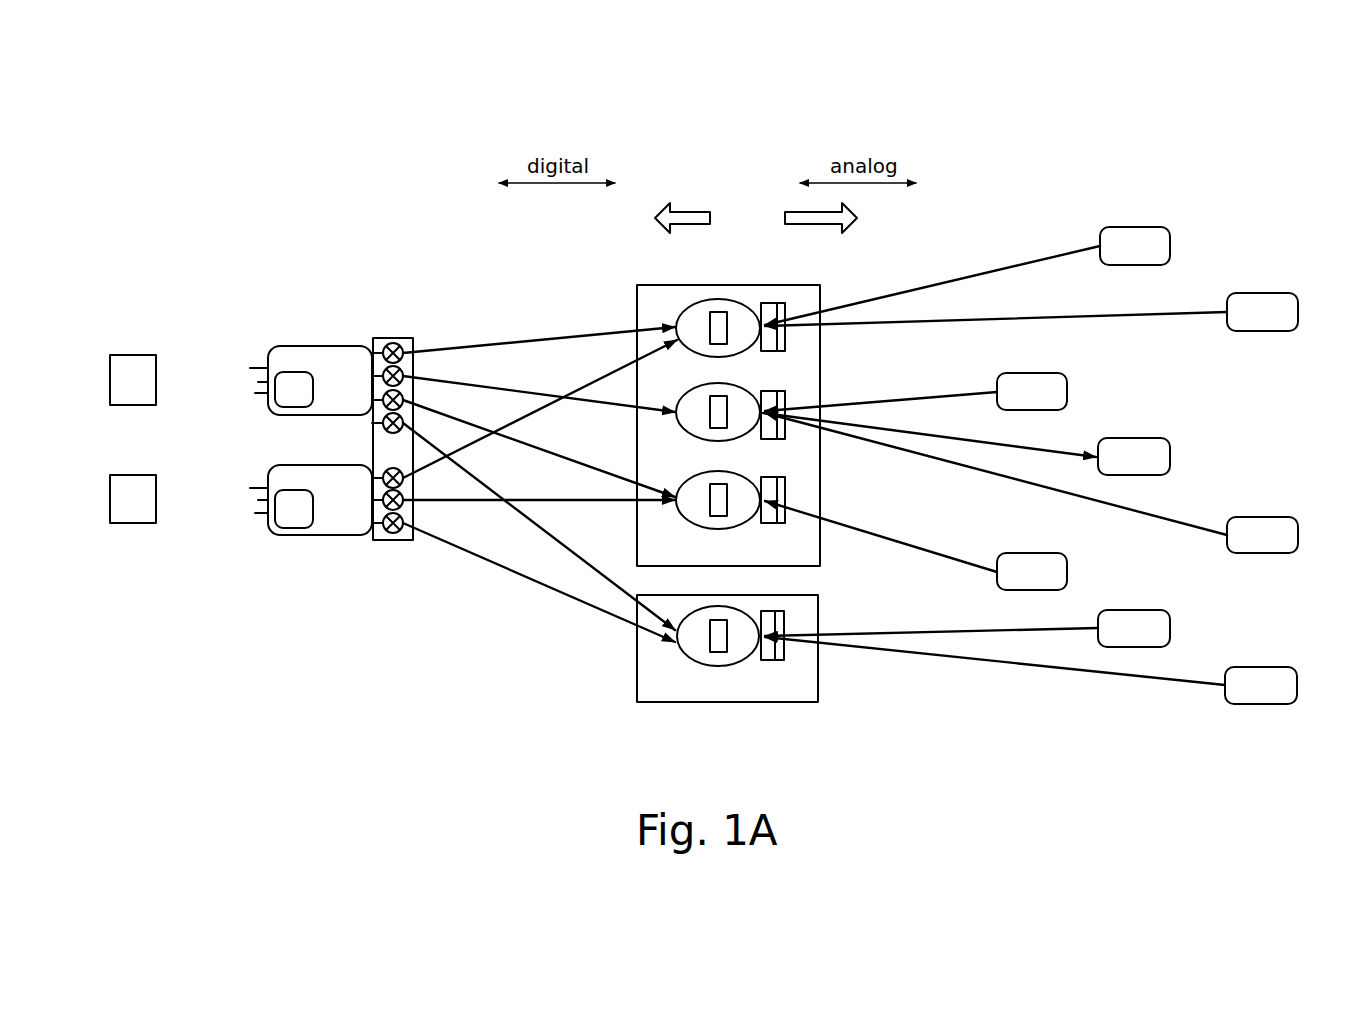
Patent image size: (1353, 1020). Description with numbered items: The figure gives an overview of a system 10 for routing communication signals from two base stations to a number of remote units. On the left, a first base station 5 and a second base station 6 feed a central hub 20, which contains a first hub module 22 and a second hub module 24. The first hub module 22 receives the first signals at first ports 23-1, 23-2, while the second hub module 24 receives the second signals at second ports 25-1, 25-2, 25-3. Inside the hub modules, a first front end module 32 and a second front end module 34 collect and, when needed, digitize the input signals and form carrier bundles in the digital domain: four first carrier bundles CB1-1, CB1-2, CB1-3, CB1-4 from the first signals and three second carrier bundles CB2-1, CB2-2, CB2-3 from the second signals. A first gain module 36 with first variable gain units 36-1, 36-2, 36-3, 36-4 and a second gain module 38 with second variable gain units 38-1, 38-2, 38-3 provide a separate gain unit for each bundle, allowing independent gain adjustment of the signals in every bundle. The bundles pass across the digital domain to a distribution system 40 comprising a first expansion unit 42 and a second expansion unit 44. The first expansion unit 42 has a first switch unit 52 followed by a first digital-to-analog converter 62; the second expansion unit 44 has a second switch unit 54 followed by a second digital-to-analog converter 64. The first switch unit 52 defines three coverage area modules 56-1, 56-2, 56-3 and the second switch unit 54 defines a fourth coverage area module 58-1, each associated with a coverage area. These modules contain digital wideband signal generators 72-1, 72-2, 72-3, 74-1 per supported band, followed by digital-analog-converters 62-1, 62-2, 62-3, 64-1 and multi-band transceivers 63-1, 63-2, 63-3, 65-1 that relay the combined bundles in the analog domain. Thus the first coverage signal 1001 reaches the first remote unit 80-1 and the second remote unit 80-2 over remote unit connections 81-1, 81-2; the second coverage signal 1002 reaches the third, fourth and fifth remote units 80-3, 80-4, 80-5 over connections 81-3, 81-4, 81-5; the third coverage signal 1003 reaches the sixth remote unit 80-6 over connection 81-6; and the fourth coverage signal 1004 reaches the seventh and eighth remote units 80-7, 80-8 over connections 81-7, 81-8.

The system 10 is at (320, 186).
The first base station 5 is at (132, 355).
The second base station 6 is at (132, 523).
The central hub 20 is at (306, 608).
The first hub module 22 is at (317, 352).
The second hub module 24 is at (307, 508).
The first port 23-1 is at (252, 368).
The first port 23-2 is at (258, 382).
The second port 25-1 is at (252, 488).
The second port 25-2 is at (258, 500).
The second port 25-3 is at (256, 513).
The first front end module 32 is at (300, 408).
The second front end module 34 is at (295, 528).
The first gain module 36 is at (411, 437).
The first variable gain unit 36-1 is at (393, 343).
The first variable gain unit 36-2 is at (403, 376).
The first variable gain unit 36-3 is at (403, 400).
The first variable gain unit 36-4 is at (403, 423).
The second gain module 38 is at (411, 545).
The second variable gain unit 38-1 is at (403, 478).
The second variable gain unit 38-2 is at (413, 518).
The second variable gain unit 38-3 is at (393, 541).
The first carrier bundle CB1-1 is at (513, 343).
The first carrier bundle CB1-2 is at (520, 390).
The first carrier bundle CB1-3 is at (607, 456).
The first carrier bundle CB1-4 is at (491, 490).
The second carrier bundle CB2-1 is at (514, 423).
The second carrier bundle CB2-2 is at (569, 503).
The second carrier bundle CB2-3 is at (515, 573).
The distribution system 40 is at (754, 708).
The first expansion unit 42 is at (710, 395).
The second expansion unit 44 is at (728, 651).
The first switch unit 52 is at (651, 297).
The second switch unit 54 is at (811, 677).
The first coverage area module 56-1 is at (703, 312).
The second coverage area module 56-2 is at (720, 412).
The third coverage area module 56-3 is at (720, 499).
The fourth coverage area module 58-1 is at (714, 651).
The digital wideband signal generator 72-1 is at (713, 312).
The digital wideband signal generator 72-2 is at (719, 398).
The digital wideband signal generator 72-3 is at (719, 486).
The digital wideband signal generator 74-1 is at (722, 650).
The first digital-to-analog converter 62 is at (823, 370).
The first digital-analog-converter 62-1 is at (832, 294).
The first digital-analog-converter 62-2 is at (819, 391).
The first digital-analog-converter 62-3 is at (831, 487).
The first multi-band transceiver 63-1 is at (784, 310).
The first multi-band transceiver 63-2 is at (784, 405).
The first multi-band transceiver 63-3 is at (784, 486).
The second digital-to-analog converter 64 is at (832, 647).
The second digital to analog converter 64-1 is at (832, 610).
The second multi-band transceiver 65-1 is at (784, 626).
The first remote unit 80-1 is at (1136, 227).
The second remote unit 80-2 is at (1260, 293).
The third remote unit 80-3 is at (1033, 373).
The fourth remote unit 80-4 is at (1133, 438).
The fifth remote unit 80-5 is at (1258, 517).
The sixth remote unit 80-6 is at (1027, 553).
The seventh remote unit 80-7 is at (1133, 610).
The eighth remote unit 80-8 is at (1263, 667).
The first remote unit connection 81-1 is at (1046, 258).
The second remote unit connection 81-2 is at (1198, 312).
The third remote unit connection 81-3 is at (955, 395).
The fourth remote unit connection 81-4 is at (1078, 454).
The fifth remote unit connection 81-5 is at (1196, 526).
The sixth remote unit connection 81-6 is at (953, 559).
The seventh remote unit connection 81-7 is at (1066, 628).
The eighth remote unit connection 81-8 is at (1183, 681).
The first coverage signal 1001 is at (1003, 252).
The second coverage signal 1002 is at (1006, 440).
The third coverage signal 1003 is at (885, 535).
The fourth coverage signal 1004 is at (1001, 624).